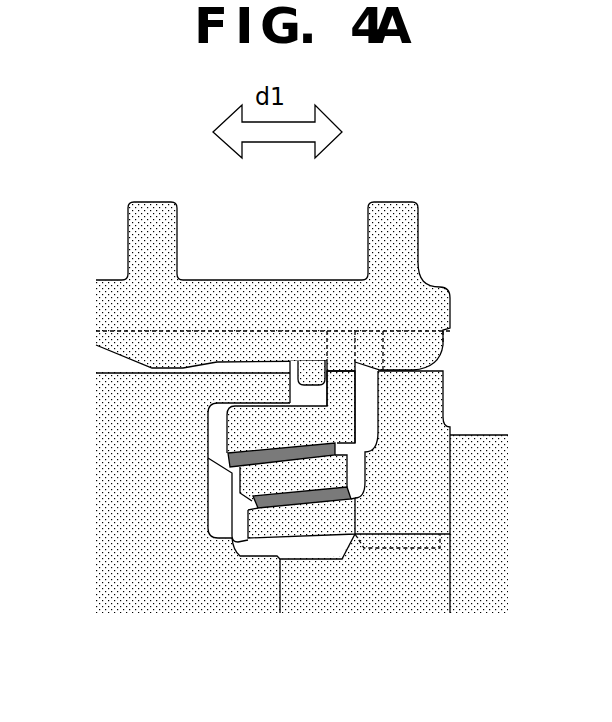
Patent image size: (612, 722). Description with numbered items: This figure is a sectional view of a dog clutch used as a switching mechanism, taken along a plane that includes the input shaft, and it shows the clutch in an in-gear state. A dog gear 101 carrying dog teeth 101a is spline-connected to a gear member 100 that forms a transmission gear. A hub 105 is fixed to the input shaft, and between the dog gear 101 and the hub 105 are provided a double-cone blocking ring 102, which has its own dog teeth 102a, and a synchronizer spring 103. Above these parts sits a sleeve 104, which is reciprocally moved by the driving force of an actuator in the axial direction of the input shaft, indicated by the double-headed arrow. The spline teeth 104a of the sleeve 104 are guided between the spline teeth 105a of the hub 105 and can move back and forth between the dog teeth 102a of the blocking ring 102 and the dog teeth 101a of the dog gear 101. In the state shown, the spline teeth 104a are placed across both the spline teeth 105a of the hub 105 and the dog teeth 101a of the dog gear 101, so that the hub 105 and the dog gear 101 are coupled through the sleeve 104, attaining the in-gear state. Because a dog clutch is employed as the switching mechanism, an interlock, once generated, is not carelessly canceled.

The gear member 100 is at (497, 530).
The dog gear 101 is at (448, 425).
The dog teeth 101a is at (443, 365).
The double-cone blocking ring 102 is at (303, 539).
The dog teeth 102a is at (338, 370).
The synchronizer spring 103 is at (306, 362).
The sleeve 104 is at (420, 267).
The spline teeth 104a is at (447, 330).
The hub 105 is at (187, 600).
The spline teeth 105a is at (110, 363).